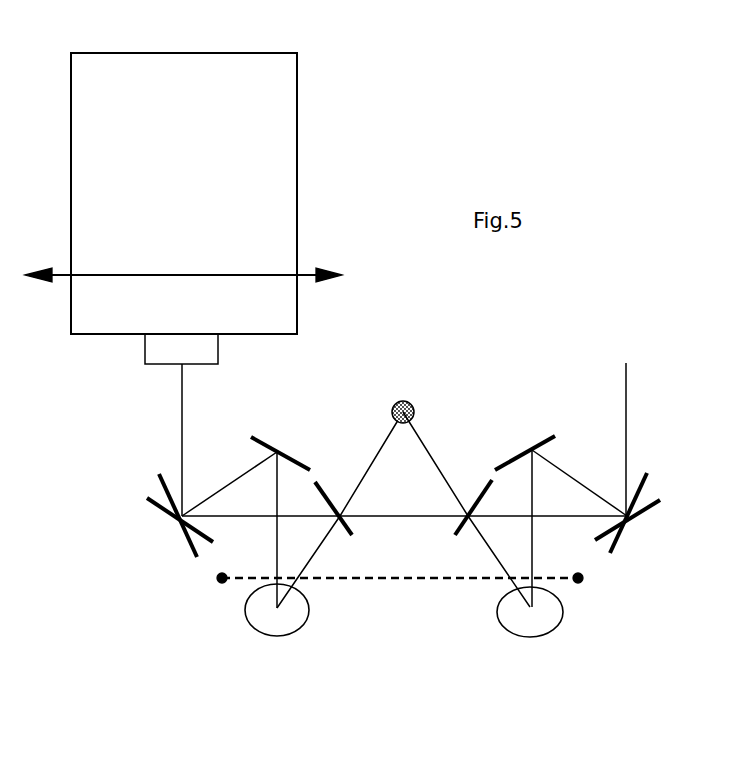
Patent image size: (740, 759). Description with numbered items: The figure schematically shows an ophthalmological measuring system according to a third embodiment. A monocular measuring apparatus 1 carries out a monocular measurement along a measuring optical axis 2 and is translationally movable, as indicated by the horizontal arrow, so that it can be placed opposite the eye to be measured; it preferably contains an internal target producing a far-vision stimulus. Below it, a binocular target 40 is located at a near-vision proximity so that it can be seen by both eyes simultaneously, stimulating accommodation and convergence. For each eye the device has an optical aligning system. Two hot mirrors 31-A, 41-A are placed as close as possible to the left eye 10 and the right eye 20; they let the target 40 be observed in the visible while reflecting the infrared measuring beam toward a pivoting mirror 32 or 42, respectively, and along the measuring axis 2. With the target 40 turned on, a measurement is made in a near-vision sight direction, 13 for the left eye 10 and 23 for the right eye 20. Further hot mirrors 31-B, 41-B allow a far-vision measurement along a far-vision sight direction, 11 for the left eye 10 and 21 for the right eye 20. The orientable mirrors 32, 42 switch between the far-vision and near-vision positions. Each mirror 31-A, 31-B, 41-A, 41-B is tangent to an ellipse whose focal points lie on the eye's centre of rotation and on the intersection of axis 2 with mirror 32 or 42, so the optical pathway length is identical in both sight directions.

The monocular measuring apparatus 1 is at (297, 124).
The measuring optical axis 2 is at (182, 393).
The left eye 10 is at (245, 608).
The FV sight direction for the left eye 11 is at (277, 538).
The NV sight direction for the left eye 13 is at (377, 461).
The right eye 20 is at (533, 637).
The FV sight direction for the right eye 21 is at (532, 538).
The NV sight direction for the right eye 23 is at (432, 458).
The hot mirror 31-A is at (356, 522).
The hot mirror 31-B is at (263, 437).
The pivoting mirror 32 is at (163, 507).
The binocular target 40 is at (410, 402).
The hot mirror 41-A is at (481, 493).
The hot mirror 41-B is at (520, 448).
The pivoting mirror 42 is at (660, 506).